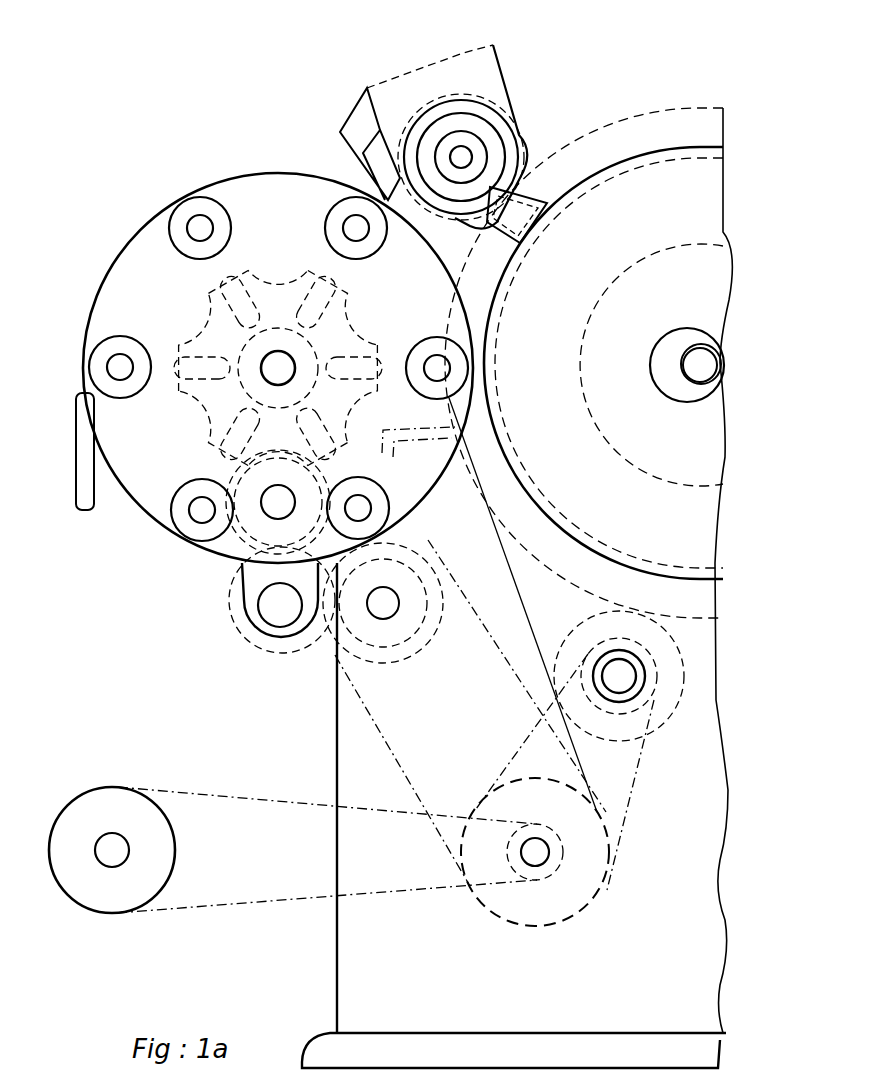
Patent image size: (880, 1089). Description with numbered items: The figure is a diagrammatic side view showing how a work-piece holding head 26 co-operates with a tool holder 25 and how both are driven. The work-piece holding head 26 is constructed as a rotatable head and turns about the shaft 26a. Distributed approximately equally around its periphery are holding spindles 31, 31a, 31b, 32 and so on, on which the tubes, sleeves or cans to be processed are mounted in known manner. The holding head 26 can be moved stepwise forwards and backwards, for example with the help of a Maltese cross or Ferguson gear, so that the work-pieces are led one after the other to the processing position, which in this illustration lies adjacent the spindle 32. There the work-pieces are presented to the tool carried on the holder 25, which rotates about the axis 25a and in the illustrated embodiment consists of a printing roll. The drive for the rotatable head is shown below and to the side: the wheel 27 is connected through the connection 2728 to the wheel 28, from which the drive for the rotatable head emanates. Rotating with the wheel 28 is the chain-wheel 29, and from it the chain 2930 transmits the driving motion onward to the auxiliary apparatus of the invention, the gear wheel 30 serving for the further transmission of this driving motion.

The tool holder 25 is at (622, 197).
The axis 25a is at (692, 374).
The work-piece holding head 26 is at (228, 175).
The shaft 26a is at (275, 372).
The wheel 27 is at (660, 712).
The wheel 28 is at (603, 873).
The chain-wheel 29 is at (527, 880).
The gear wheel 30 is at (110, 903).
The holding spindle 31 is at (115, 347).
The holding spindle 31a is at (168, 190).
The holding spindle 31b is at (333, 194).
The holding spindle 32 is at (445, 385).
The connection 2728 is at (624, 812).
The chain 2930 is at (203, 793).